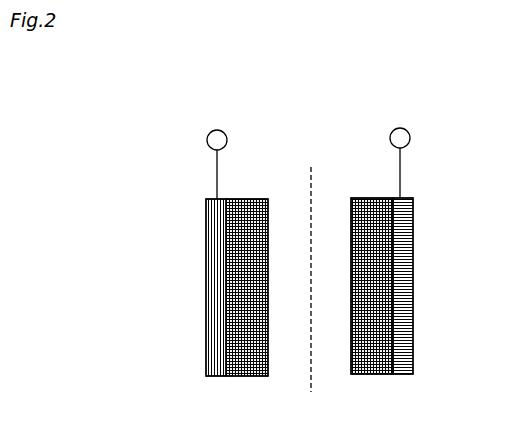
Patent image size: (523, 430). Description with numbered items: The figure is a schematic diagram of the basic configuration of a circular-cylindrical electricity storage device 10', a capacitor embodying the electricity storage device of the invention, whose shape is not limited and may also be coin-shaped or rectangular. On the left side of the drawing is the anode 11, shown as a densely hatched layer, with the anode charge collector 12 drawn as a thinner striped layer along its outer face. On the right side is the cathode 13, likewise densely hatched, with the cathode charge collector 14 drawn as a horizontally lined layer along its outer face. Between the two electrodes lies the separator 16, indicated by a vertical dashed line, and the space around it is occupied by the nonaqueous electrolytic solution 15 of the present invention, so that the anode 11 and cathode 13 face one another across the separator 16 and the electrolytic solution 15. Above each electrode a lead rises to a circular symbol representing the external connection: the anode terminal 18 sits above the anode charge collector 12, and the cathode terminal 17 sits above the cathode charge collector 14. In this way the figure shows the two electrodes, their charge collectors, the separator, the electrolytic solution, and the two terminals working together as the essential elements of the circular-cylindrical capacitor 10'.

The circular-cylindrical electricity storage device 10' is at (330, 87).
The anode 11 is at (253, 376).
The anode charge collector 12 is at (206, 357).
The cathode 13 is at (366, 374).
The cathode charge collector 14 is at (403, 374).
The nonaqueous electrolytic solution 15 is at (337, 288).
The separator 16 is at (313, 182).
The cathode terminal 17 is at (411, 135).
The anode terminal 18 is at (228, 137).